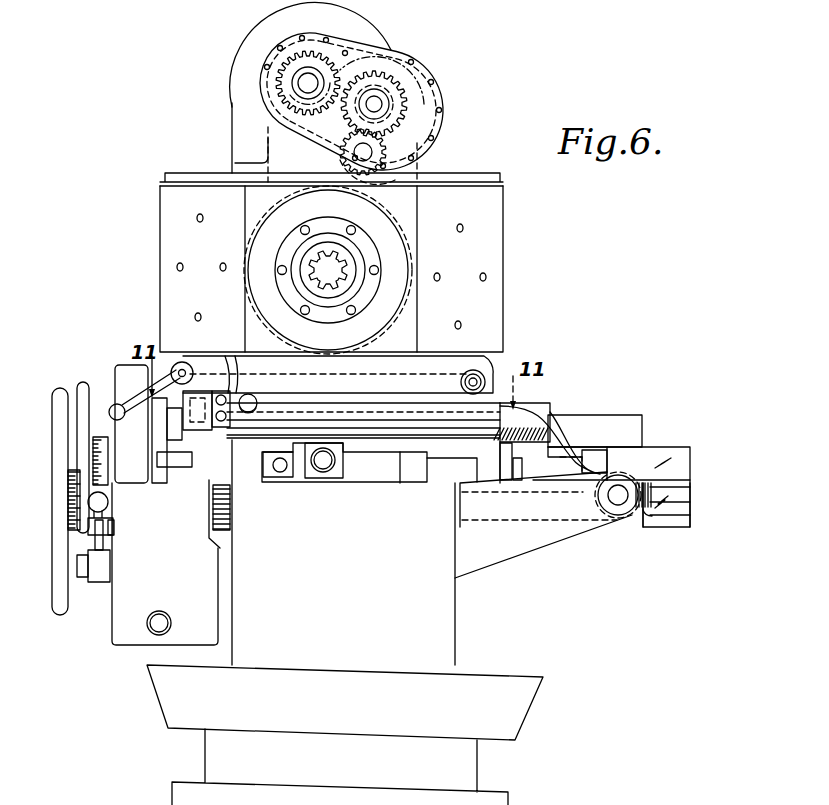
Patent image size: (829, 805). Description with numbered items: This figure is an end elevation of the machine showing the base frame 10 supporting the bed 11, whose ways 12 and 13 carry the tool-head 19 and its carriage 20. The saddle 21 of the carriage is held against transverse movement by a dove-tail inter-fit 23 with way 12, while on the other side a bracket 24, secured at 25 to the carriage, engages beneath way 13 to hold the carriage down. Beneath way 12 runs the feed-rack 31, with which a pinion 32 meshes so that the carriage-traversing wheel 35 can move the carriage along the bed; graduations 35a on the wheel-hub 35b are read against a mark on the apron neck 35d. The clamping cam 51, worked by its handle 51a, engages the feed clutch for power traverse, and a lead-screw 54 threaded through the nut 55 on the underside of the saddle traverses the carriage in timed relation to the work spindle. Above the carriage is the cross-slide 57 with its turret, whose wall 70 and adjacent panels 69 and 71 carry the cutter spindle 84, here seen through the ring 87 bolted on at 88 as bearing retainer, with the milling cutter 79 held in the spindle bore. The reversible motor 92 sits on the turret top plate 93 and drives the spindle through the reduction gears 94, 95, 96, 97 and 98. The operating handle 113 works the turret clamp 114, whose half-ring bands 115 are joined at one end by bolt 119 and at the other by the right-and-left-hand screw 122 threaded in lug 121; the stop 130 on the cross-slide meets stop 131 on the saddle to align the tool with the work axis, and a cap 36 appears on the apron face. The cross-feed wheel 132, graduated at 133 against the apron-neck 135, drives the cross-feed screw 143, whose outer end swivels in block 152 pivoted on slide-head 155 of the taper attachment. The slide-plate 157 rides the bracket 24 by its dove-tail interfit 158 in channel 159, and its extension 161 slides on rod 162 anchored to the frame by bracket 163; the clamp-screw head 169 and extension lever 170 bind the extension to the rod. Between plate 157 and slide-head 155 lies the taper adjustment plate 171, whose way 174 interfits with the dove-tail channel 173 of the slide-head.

The base frame 10 is at (448, 640).
The bed 11 is at (437, 478).
The way 12 is at (245, 463).
The way 13 is at (433, 472).
The tool-head 19 is at (503, 177).
The carriage 20 is at (506, 412).
The saddle 21 is at (380, 445).
The dove-tail inter-fit 23 is at (223, 484).
The bracket 24 is at (686, 525).
The securing point 25 is at (521, 478).
The feed-rack 31 is at (213, 497).
The pinion 32 is at (212, 513).
The carriage-traversing wheel 35 is at (57, 408).
The graduations 35a is at (68, 500).
The wheel-hub 35b is at (70, 516).
The apron neck 35d is at (90, 526).
The cap 36 is at (168, 623).
The clamping cam 51 is at (90, 565).
The handle 51a is at (96, 540).
The lead-screw 54 is at (323, 465).
The nut 55 is at (336, 474).
The cross-slide 57 is at (506, 405).
The housing side 69 is at (490, 333).
The wall 70 is at (403, 343).
The housing panel 71 is at (175, 195).
The milling cutter 79 is at (350, 270).
The spindle 84 is at (346, 256).
The ring 87 is at (293, 241).
The bolts 88 is at (352, 226).
The motor 92 is at (258, 36).
The top plate 93 is at (197, 173).
The gear 94 is at (267, 78).
The gear 95 is at (410, 90).
The gear 96 is at (384, 105).
The gear 97 is at (390, 143).
The gear 98 is at (392, 152).
The operating handle 113 is at (140, 396).
The turret clamp 114 is at (252, 363).
The half-ring bands 115 is at (262, 372).
The bolt 119 is at (487, 378).
The lug 121 is at (176, 364).
The right-and-left-hand screw 122 is at (182, 362).
The stop 130 is at (237, 363).
The stop 131 is at (205, 433).
The cross-feed wheel 132 is at (80, 388).
The graduations 133 is at (95, 443).
The apron-neck 135 is at (102, 456).
The cross-feed screw 143 is at (557, 457).
The block 152 is at (607, 425).
The slide-head 155 is at (668, 454).
The slide-plate 157 is at (692, 487).
The dove-tail interfit 158 is at (692, 502).
The channel 159 is at (692, 515).
The plate-extension 161 is at (644, 527).
The rod 162 is at (621, 502).
The bracket 163 is at (519, 548).
The head 169 is at (601, 449).
The extension lever 170 is at (594, 452).
The taper adjustment plate 171 is at (692, 478).
The dove-tail channel 173 is at (652, 447).
The way 174 is at (667, 462).